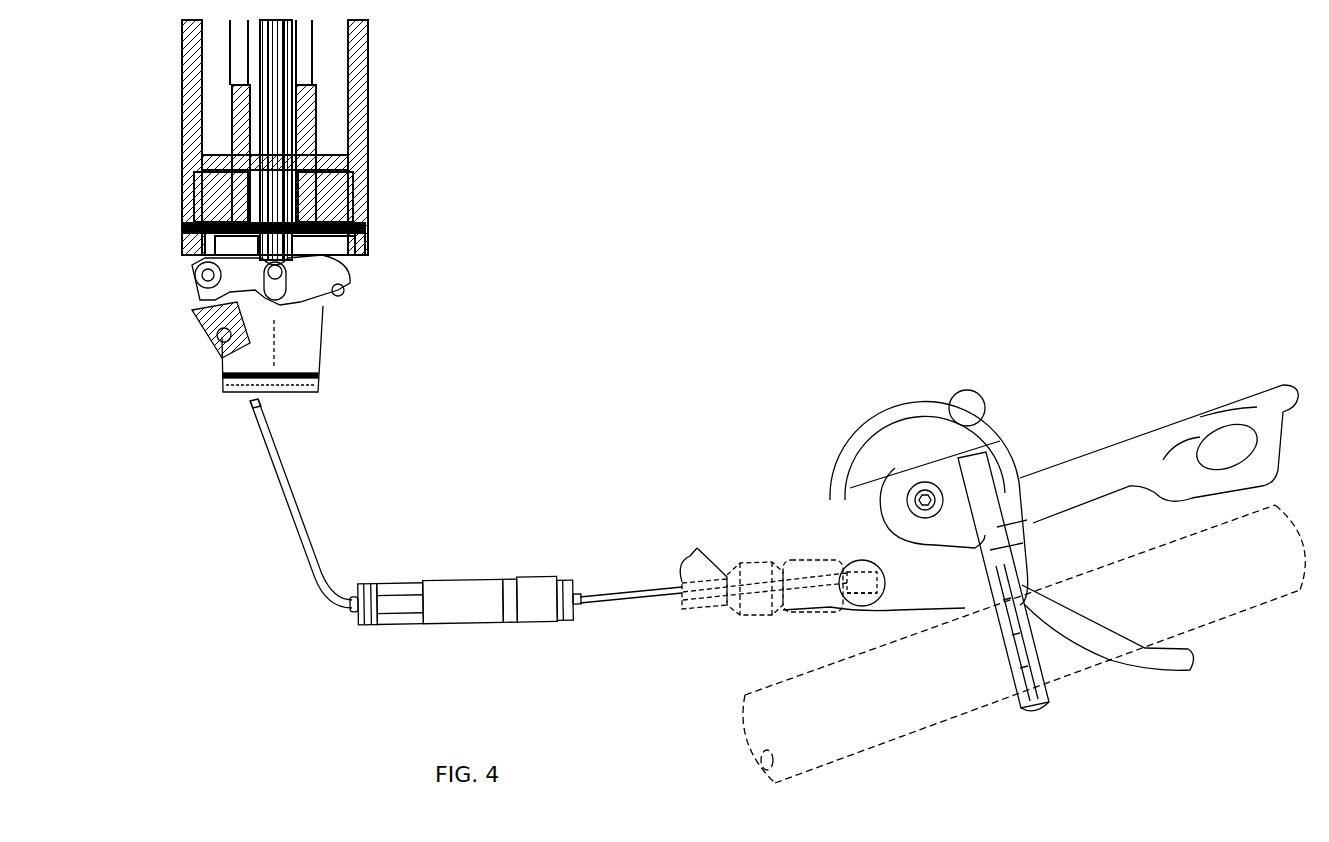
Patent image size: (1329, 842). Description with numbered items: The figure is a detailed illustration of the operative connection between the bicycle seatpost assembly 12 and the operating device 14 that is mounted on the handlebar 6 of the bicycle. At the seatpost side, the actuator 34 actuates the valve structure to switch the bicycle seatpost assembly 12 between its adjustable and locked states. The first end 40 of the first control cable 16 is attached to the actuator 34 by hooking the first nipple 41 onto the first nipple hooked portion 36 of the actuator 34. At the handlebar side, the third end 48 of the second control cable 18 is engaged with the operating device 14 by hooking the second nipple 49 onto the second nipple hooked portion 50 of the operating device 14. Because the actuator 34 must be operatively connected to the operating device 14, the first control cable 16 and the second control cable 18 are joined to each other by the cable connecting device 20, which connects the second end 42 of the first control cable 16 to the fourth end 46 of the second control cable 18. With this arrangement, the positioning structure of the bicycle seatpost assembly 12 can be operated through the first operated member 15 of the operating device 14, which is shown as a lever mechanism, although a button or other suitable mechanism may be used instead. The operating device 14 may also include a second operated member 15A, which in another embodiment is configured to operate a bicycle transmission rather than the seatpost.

The bicycle seatpost assembly 12 is at (398, 160).
The actuator 34 is at (335, 327).
The first nipple hooked portion 36 is at (192, 300).
The first nipple 41 is at (207, 318).
The first end 40 is at (250, 404).
The first control cable 16 is at (280, 532).
The second end 42 is at (348, 619).
The cable connecting device 20 is at (450, 578).
The fourth end 46 is at (590, 623).
The second control cable 18 is at (661, 608).
The third end 48 is at (800, 583).
The second nipple 49 is at (856, 566).
The second nipple hooked portion 50 is at (848, 597).
The operating device 14 is at (918, 392).
The first operated member 15 is at (1195, 385).
The second operated member 15A is at (1188, 680).
The handlebar 6 is at (918, 690).